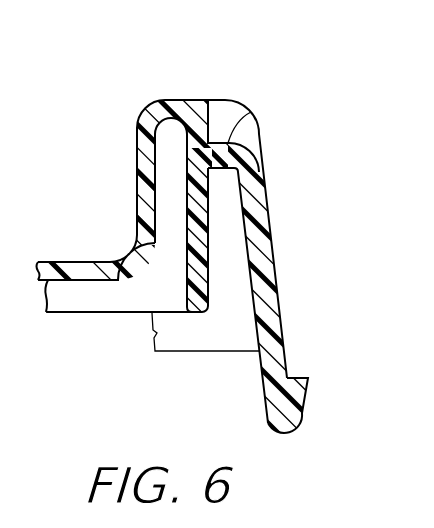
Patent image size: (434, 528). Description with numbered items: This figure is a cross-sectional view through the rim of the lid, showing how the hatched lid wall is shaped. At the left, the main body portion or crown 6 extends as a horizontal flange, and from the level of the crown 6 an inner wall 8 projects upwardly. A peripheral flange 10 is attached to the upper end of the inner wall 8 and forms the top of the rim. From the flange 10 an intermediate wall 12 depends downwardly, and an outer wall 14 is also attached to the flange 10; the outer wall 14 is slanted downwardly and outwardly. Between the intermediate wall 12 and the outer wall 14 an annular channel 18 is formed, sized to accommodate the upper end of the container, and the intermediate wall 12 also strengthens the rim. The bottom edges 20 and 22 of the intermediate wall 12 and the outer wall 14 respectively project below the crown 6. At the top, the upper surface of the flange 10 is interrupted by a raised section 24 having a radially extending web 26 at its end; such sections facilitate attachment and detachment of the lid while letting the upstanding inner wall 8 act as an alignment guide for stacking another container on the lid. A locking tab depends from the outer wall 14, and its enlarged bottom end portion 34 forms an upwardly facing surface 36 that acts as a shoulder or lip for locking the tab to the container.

The crown 6 is at (78, 261).
The inner wall 8 is at (137, 173).
The peripheral flange 10 is at (223, 143).
The intermediate wall 12 is at (188, 258).
The outer wall 14 is at (267, 222).
The annular channel 18 is at (228, 252).
The bottom edge of intermediate wall 20 is at (80, 313).
The bottom edge of outer wall 22 is at (207, 353).
The raised section 24 is at (192, 101).
The radially extending web 26 is at (227, 104).
The bottom end portion 34 is at (300, 413).
The upwardly facing surface 36 is at (290, 376).